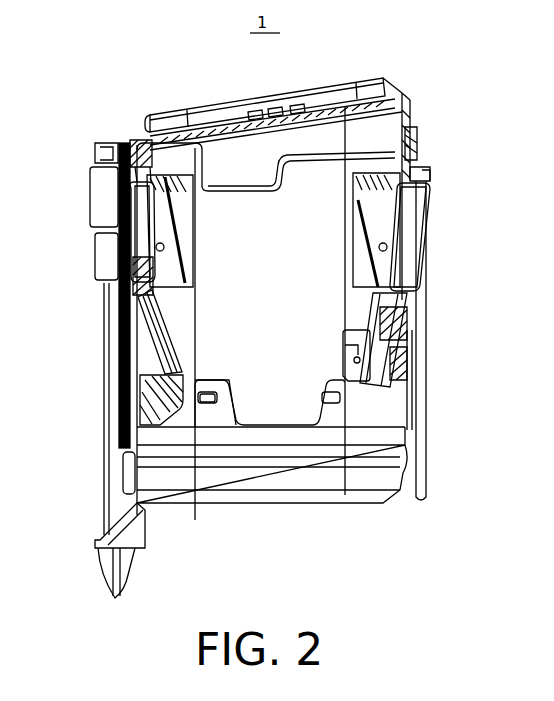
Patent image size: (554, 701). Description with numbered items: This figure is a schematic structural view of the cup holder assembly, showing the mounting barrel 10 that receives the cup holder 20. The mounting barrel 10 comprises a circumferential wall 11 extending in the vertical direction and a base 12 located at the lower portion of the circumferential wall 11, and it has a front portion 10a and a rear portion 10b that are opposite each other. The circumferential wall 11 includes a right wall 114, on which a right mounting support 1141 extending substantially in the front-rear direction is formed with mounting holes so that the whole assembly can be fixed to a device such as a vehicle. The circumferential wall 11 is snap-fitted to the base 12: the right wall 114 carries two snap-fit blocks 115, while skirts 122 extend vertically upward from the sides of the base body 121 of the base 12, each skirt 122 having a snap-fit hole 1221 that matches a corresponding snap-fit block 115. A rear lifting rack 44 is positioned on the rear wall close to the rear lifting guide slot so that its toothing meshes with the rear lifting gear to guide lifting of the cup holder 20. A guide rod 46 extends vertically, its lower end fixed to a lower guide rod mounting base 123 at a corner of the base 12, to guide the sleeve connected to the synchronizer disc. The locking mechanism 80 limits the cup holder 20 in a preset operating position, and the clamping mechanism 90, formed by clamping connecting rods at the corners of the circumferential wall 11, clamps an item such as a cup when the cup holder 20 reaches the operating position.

The mounting barrel 10 is at (368, 126).
The front portion 10a is at (404, 80).
The rear portion 10b is at (126, 131).
The circumferential wall 11 is at (225, 297).
The base 12 is at (323, 477).
The cup holder 20 is at (258, 97).
The rear lifting rack 44 is at (120, 413).
The guide rod 46 is at (105, 395).
The locking mechanism 80 is at (425, 401).
The clamping mechanism 90 is at (422, 273).
The right wall 114 is at (218, 287).
The snap-fit block 115 is at (160, 417).
The base body 121 is at (260, 467).
The skirt 122 is at (212, 408).
The lower guide rod mounting base 123 is at (130, 523).
The right mounting support 1141 is at (118, 218).
The snap-fit hole 1221 is at (209, 404).